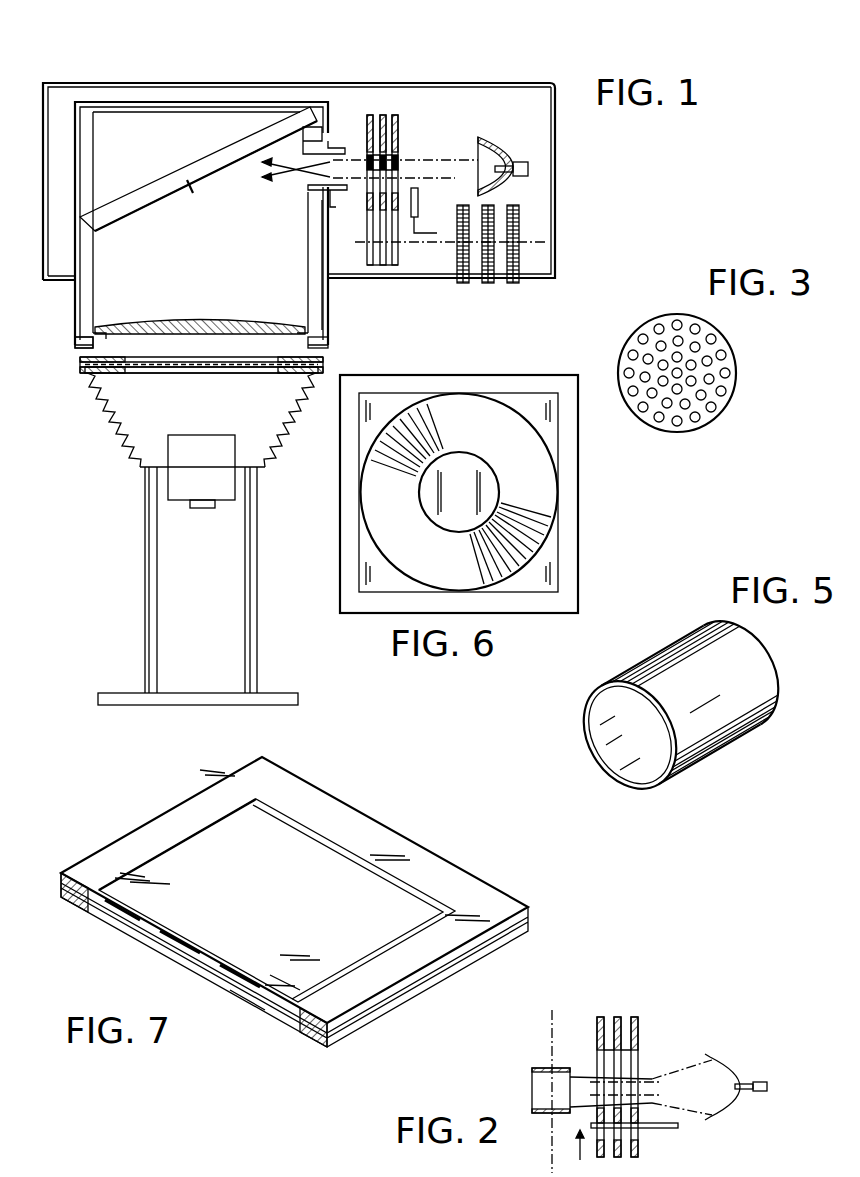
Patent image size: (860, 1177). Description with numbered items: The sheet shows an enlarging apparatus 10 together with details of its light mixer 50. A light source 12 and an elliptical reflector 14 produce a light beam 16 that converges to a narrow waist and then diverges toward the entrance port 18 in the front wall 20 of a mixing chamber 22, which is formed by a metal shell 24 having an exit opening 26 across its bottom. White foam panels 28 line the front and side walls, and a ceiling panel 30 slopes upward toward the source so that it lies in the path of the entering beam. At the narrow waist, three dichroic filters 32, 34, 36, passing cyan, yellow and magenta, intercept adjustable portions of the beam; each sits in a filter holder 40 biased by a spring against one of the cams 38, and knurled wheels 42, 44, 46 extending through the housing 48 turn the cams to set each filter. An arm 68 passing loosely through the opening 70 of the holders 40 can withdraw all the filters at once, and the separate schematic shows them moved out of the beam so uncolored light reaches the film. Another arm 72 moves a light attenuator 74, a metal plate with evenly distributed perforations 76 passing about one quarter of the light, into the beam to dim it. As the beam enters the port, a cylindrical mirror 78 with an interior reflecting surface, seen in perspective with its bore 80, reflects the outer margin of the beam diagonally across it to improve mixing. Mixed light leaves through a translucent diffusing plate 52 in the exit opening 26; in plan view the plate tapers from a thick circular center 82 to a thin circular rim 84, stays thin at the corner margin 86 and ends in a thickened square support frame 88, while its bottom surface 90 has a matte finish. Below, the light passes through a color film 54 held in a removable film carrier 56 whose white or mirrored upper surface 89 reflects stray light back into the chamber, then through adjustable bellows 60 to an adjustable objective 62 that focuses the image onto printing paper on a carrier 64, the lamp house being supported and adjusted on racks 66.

In FIG. 1, the enlarging apparatus 10 is at (60, 530).
In FIG. 1, the light source 12 is at (521, 162).
In FIG. 2, the light source 12 is at (740, 1094).
In FIG. 1, the elliptical reflector 14 is at (499, 152).
In FIG. 2, the elliptical reflector 14 is at (734, 1071).
In FIG. 1, the light beam 16 is at (437, 158).
In FIG. 2, the light beam 16 is at (685, 1078).
In FIG. 1, the entrance port 18 is at (338, 192).
In FIG. 1, the front wall 20 is at (333, 242).
In FIG. 1, the mixing chamber 22 is at (153, 210).
In FIG. 1, the metal shell 24 is at (218, 100).
In FIG. 1, the exit opening 26 is at (76, 330).
In FIG. 1, the white foam panels 28 is at (94, 154).
In FIG. 1, the ceiling panel 30 is at (203, 199).
In FIG. 1, the dichroic filter 32 is at (368, 115).
In FIG. 2, the dichroic filter 32 is at (596, 1052).
In FIG. 1, the dichroic filter 34 is at (383, 115).
In FIG. 2, the dichroic filter 34 is at (613, 1052).
In FIG. 1, the dichroic filter 36 is at (396, 115).
In FIG. 2, the dichroic filter 36 is at (639, 1052).
In FIG. 1, the cams 38 is at (395, 266).
In FIG. 1, the filter holders 40 is at (377, 152).
In FIG. 2, the filter holders 40 is at (606, 1050).
In FIG. 1, the knurled wheel 42 is at (460, 284).
In FIG. 1, the knurled wheel 44 is at (488, 284).
In FIG. 1, the knurled wheel 46 is at (514, 284).
In FIG. 1, the housing 48 is at (556, 222).
In FIG. 1, the light mixer 50 is at (145, 76).
In FIG. 1, the diffusing plate 52 is at (221, 322).
In FIG. 6, the diffusing plate 52 is at (503, 365).
In FIG. 1, the color film 54 is at (140, 368).
In FIG. 7, the color film 54 is at (210, 857).
In FIG. 1, the film carrier 56 is at (105, 374).
In FIG. 7, the film carrier 56 is at (372, 840).
In FIG. 1, the adjustable bellows 60 is at (295, 440).
In FIG. 1, the adjustable objective 62 is at (226, 500).
In FIG. 1, the carrier 64 is at (193, 692).
In FIG. 1, the racks 66 is at (158, 595).
In FIG. 2, the arm 68 is at (668, 1129).
In FIG. 2, the opening 70 is at (640, 1140).
In FIG. 1, the arm 72 is at (418, 245).
In FIG. 1, the light attenuator 74 is at (419, 223).
In FIG. 3, the light attenuator 74 is at (708, 420).
In FIG. 3, the perforations 76 is at (726, 358).
In FIG. 1, the cylindrical mirror 78 is at (300, 150).
In FIG. 5, the cylindrical mirror 78 is at (687, 650).
In FIG. 5, the tube bore 80 is at (600, 708).
In FIG. 6, the circular center 82 is at (505, 524).
In FIG. 6, the circular rim 84 is at (552, 446).
In FIG. 6, the corner margin 86 is at (376, 413).
In FIG. 6, the support frame 88 is at (580, 492).
In FIG. 1, the upper surface 89 is at (80, 357).
In FIG. 7, the upper surface 89 is at (347, 818).
In FIG. 1, the bottom surface 90 is at (146, 341).